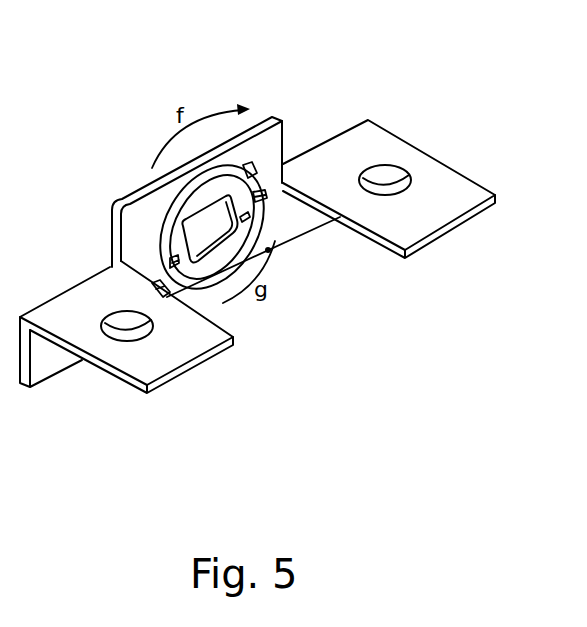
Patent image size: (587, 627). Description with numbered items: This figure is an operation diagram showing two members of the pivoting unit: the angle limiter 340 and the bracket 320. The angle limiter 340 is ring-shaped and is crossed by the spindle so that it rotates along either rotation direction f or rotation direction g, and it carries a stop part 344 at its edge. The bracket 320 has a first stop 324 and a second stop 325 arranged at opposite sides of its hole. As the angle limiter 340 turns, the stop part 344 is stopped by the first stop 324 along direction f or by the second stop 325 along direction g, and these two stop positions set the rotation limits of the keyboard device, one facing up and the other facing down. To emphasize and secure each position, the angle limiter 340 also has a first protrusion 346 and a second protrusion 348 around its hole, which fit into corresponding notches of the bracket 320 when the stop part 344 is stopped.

The bracket 320 is at (268, 116).
The first stop 324 is at (286, 180).
The second stop 325 is at (166, 289).
The angle limiter 340 is at (239, 230).
The stop part 344 is at (283, 181).
The first protrusion 346 is at (172, 258).
The second protrusion 348 is at (257, 215).